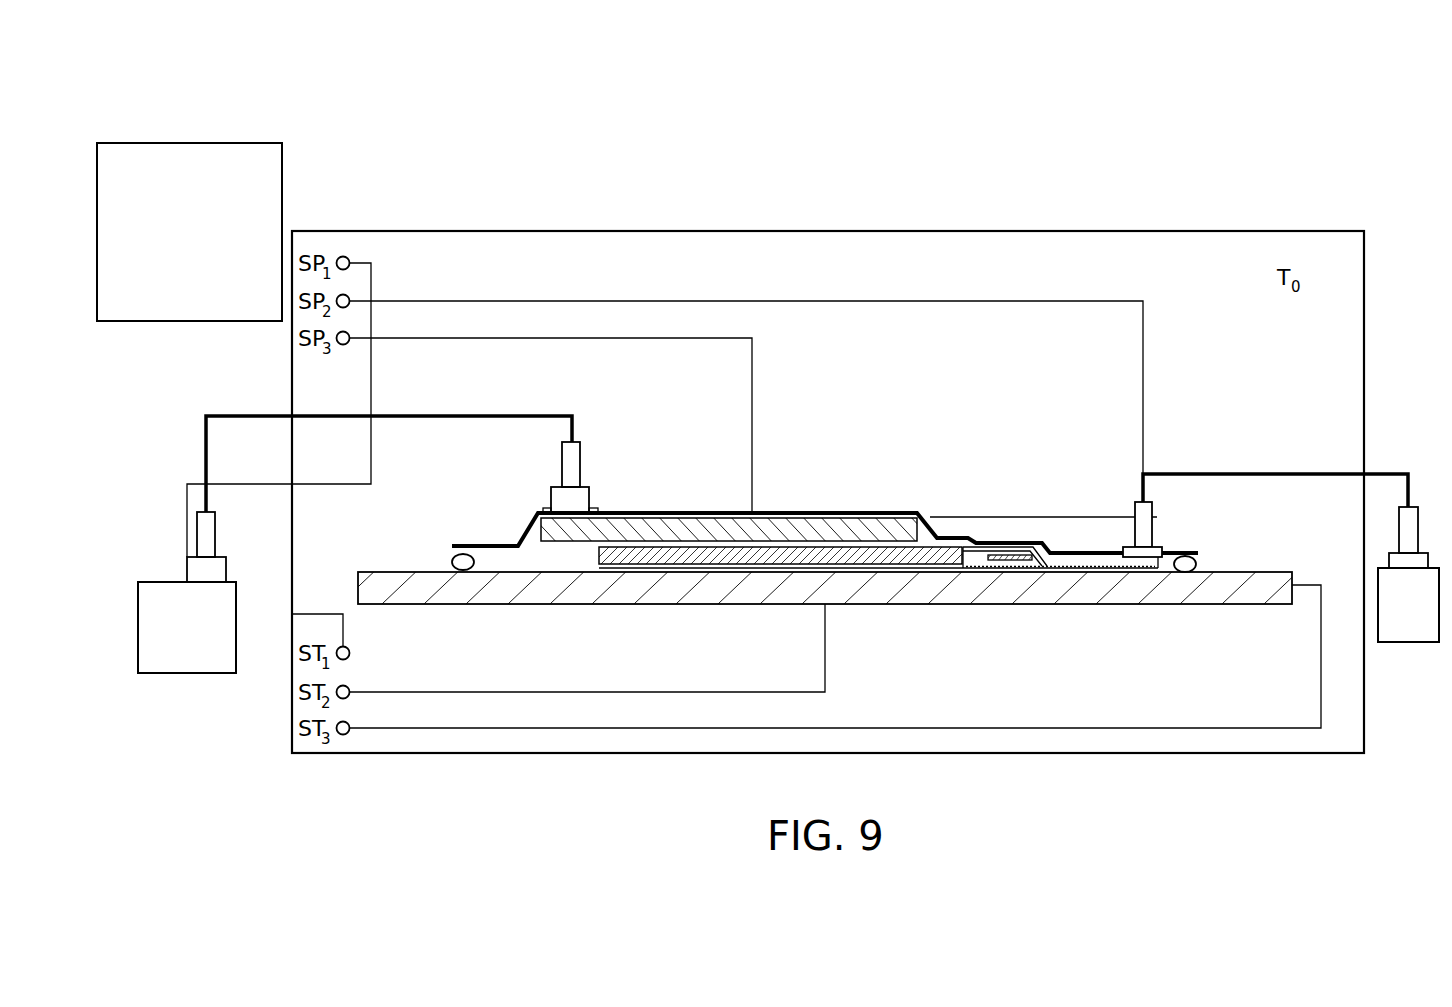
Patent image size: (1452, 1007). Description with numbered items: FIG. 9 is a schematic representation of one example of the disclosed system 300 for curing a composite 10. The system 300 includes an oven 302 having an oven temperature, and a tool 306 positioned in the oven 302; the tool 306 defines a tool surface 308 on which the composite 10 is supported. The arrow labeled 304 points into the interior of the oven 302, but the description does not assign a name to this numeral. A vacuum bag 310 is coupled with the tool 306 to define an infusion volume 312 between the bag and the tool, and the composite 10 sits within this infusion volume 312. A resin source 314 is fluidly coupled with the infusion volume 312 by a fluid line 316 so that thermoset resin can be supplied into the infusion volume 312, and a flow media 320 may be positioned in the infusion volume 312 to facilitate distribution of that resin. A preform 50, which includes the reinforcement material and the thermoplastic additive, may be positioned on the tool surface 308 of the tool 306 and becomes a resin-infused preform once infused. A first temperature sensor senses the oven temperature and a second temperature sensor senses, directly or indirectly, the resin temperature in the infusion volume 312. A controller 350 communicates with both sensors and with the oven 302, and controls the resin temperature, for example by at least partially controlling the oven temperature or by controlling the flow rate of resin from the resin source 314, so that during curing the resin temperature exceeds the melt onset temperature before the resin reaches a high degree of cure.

The system 300 is at (1133, 145).
The oven 302 is at (548, 231).
The test chamber 304 is at (827, 260).
The tool 306 is at (913, 588).
The tool surface 308 is at (557, 560).
The vacuum bag 310 is at (805, 512).
The infusion volume 312 is at (518, 567).
The resin source 314 is at (187, 673).
The fluid line 316 is at (432, 415).
The flow media 320 is at (657, 527).
The composite 10 is at (867, 553).
The preform 50 is at (935, 542).
The controller 350 is at (187, 143).